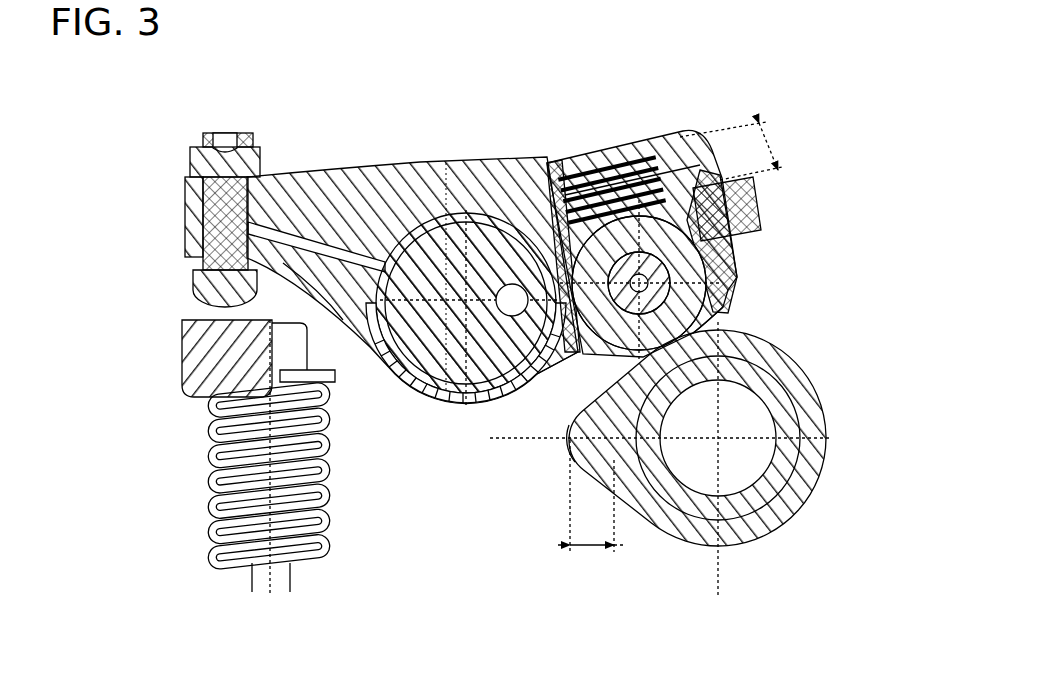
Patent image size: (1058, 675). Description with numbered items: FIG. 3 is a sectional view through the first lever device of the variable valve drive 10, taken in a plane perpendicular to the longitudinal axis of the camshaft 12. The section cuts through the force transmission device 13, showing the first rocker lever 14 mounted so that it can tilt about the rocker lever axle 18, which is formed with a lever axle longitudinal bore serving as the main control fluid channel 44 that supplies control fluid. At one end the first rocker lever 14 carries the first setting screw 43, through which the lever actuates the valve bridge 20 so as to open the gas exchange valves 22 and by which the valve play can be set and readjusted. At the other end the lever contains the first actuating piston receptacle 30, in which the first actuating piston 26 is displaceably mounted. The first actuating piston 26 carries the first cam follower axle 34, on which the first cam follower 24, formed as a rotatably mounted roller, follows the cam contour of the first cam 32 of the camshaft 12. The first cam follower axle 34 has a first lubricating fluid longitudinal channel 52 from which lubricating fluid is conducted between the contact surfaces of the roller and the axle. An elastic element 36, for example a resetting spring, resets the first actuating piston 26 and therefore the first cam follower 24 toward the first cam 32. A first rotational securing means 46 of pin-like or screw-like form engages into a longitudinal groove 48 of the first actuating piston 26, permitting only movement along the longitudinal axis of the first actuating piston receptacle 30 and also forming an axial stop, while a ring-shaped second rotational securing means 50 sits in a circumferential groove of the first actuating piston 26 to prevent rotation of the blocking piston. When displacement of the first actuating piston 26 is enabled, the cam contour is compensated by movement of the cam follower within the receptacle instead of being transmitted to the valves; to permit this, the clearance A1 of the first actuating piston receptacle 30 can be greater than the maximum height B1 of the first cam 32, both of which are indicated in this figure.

The variable valve drive 10 is at (822, 105).
The camshaft 12 is at (828, 352).
The force transmission device 13 is at (344, 140).
The first rocker lever 14 is at (367, 170).
The rocker lever axle 18 is at (428, 355).
The valve bridge 20 is at (184, 362).
The gas exchange valves 22 is at (262, 583).
The first cam follower 24 is at (625, 150).
The first actuating piston 26 is at (736, 284).
The first actuating piston receptacle 30 is at (715, 180).
The first cam 32 is at (576, 450).
The first cam follower axle 34 is at (585, 388).
The elastic element 36 is at (648, 180).
The first setting screw 43 is at (187, 162).
The main control fluid channel 44 is at (505, 284).
The first rotational securing means 46 is at (758, 205).
The longitudinal groove 48 is at (735, 250).
The second rotational securing means 50 is at (553, 258).
The first lubricating fluid longitudinal channel 52 is at (702, 310).
The clearance A1 is at (748, 151).
The maximum height B1 is at (592, 513).